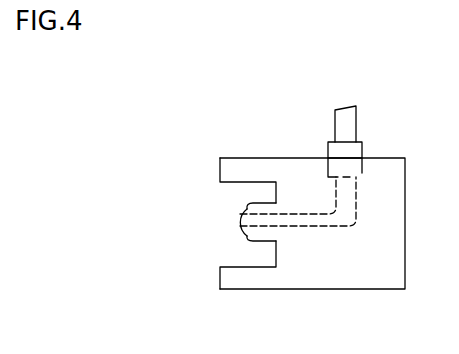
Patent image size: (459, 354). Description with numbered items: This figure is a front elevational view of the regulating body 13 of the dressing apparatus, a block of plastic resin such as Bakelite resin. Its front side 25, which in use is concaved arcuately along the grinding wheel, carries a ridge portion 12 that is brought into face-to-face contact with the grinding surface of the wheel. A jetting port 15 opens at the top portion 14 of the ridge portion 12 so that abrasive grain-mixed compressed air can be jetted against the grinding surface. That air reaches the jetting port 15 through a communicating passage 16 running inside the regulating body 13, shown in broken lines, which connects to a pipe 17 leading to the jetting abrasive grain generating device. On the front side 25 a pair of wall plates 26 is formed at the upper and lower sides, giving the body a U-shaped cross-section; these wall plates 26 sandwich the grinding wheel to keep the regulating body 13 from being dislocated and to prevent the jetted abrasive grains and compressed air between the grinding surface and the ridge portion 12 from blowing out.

The regulating body 13 is at (396, 259).
The wall plates 26 is at (235, 166).
The top portion 14 is at (242, 214).
The ridge portion 12 is at (245, 242).
The jetting port 15 is at (240, 222).
The front side 25 is at (223, 238).
The communicating passage 16 is at (308, 224).
The pipe 17 is at (352, 123).